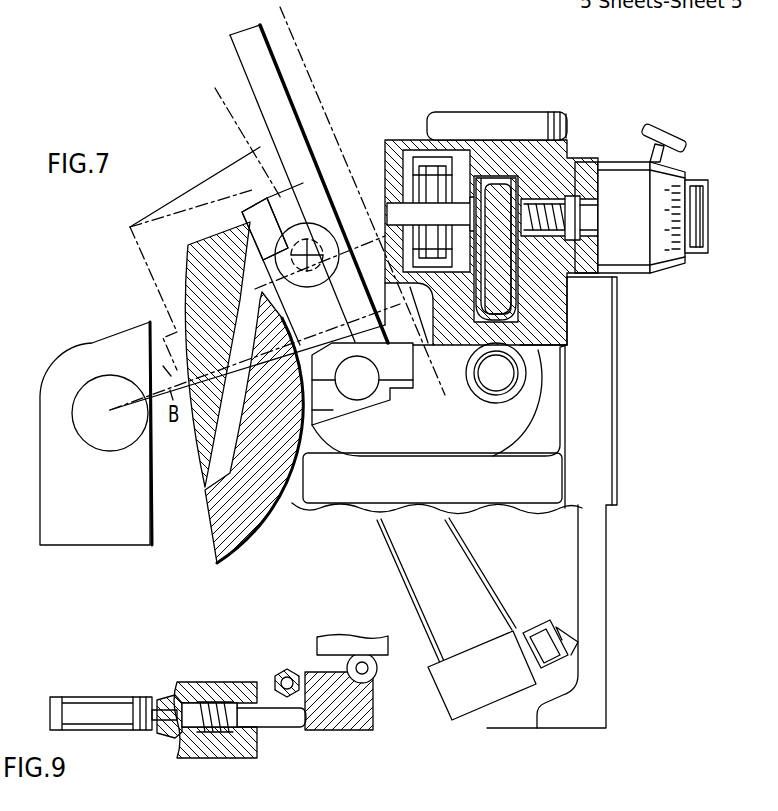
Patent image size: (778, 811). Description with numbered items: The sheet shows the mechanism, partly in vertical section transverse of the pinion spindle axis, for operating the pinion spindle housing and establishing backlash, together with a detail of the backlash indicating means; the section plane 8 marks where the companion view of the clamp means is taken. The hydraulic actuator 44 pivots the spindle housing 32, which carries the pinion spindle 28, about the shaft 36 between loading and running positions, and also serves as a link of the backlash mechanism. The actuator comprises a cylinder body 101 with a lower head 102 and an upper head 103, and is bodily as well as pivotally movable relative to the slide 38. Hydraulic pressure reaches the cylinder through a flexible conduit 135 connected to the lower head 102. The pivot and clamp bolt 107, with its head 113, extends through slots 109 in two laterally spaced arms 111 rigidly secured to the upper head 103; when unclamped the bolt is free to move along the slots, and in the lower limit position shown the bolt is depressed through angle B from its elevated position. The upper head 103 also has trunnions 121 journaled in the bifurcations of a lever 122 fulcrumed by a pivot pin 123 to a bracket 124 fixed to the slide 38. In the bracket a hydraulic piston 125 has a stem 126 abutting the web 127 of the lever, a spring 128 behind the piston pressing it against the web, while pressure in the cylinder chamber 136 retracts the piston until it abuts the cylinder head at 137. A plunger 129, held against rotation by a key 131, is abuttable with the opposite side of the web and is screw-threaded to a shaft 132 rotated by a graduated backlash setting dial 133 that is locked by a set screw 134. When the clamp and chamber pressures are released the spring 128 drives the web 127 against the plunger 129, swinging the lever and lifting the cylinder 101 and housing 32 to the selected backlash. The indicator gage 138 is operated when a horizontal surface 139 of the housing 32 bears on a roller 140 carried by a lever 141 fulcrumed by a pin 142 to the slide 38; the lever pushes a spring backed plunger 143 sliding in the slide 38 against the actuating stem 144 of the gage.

In FIG. 7, the section plane 8— 8 is at (280, 6).
In FIG. 7, the pinion spindle 28 is at (203, 437).
In FIG. 7, the spindle housing 32 is at (218, 530).
In FIG. 7, the shaft 36 is at (97, 428).
In FIG. 7, the slide 38 is at (596, 539).
In FIG. 9, the slide 38 is at (198, 735).
In FIG. 7, the hydraulic actuator 44 is at (377, 523).
In FIG. 7, the cylinder body 101 is at (462, 606).
In FIG. 7, the lower head 102 is at (502, 692).
In FIG. 7, the upper head 103 is at (247, 392).
In FIG. 7, the pivot and clamp bolt 107 is at (262, 200).
In FIG. 7, the slots 109 is at (280, 203).
In FIG. 7, the arms 111 is at (324, 322).
In FIG. 7, the head 113 is at (265, 229).
In FIG. 7, the trunnions 121 is at (365, 385).
In FIG. 7, the lever 122 is at (435, 447).
In FIG. 7, the pivot pin 123 is at (481, 383).
In FIG. 7, the bracket 124 is at (562, 299).
In FIG. 7, the hydraulic piston 125 is at (440, 150).
In FIG. 7, the stem 126 is at (474, 188).
In FIG. 7, the web 127 is at (496, 249).
In FIG. 7, the spring 128 is at (413, 142).
In FIG. 7, the plunger 129 is at (553, 195).
In FIG. 7, the key 131 is at (550, 238).
In FIG. 7, the shaft 132 is at (590, 217).
In FIG. 7, the graduated backlash setting dial 133 is at (680, 268).
In FIG. 7, the set screw 134 is at (668, 143).
In FIG. 7, the flexible conduit 135 is at (562, 645).
In FIG. 7, the cylinder chamber 136 is at (468, 185).
In FIG. 7, the cylinder head abutment 137 is at (384, 163).
In FIG. 9, the indicator gage 138 is at (107, 700).
In FIG. 9, the horizontal surface 139 is at (382, 656).
In FIG. 9, the roller 140 is at (373, 682).
In FIG. 9, the lever 141 is at (333, 718).
In FIG. 9, the pin 142 is at (300, 668).
In FIG. 9, the spring backed plunger 143 is at (284, 718).
In FIG. 9, the actuating stem 144 is at (175, 703).